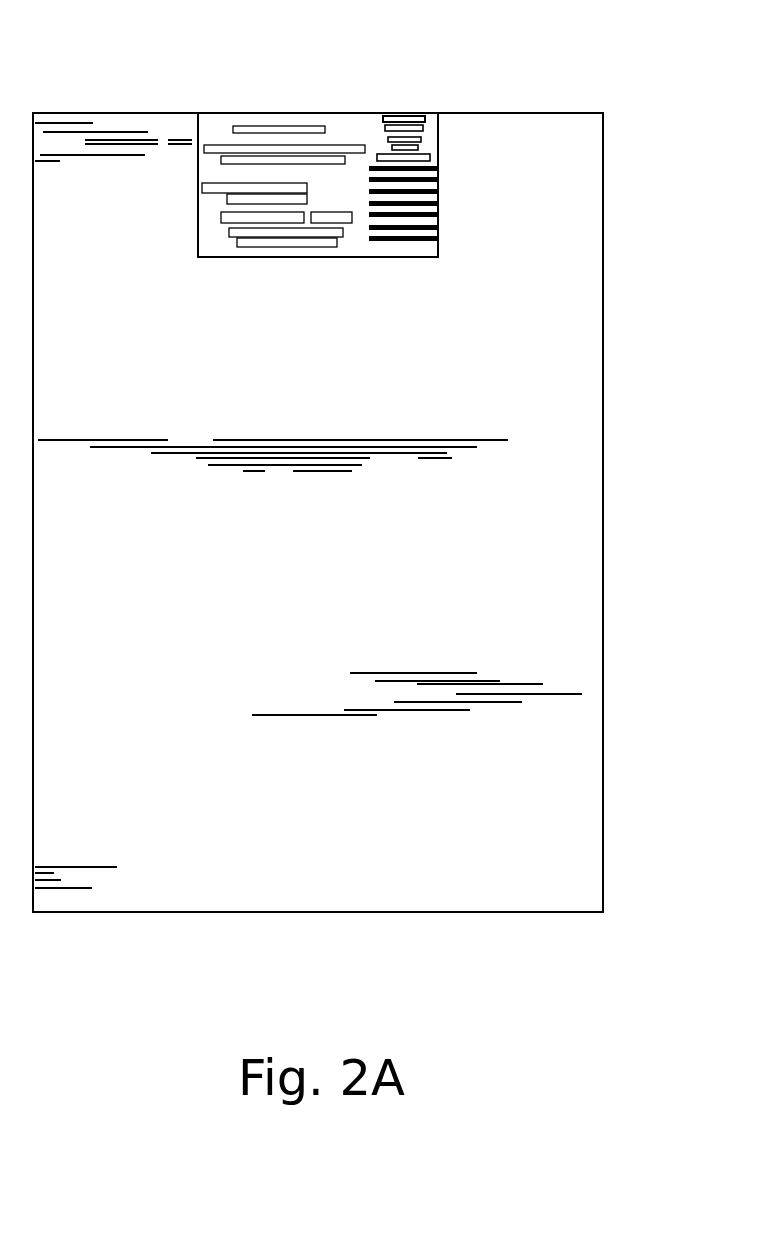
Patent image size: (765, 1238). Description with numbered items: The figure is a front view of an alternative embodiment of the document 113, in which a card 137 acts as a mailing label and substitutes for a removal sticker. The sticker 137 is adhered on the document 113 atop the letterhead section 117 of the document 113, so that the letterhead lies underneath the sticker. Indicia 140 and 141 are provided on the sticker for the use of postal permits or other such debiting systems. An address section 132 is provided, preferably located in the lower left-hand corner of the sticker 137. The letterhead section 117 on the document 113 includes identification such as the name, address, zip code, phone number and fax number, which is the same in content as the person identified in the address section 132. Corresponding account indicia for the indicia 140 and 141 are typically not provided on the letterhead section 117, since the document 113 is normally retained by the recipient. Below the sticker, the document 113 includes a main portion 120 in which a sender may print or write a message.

The document 113 is at (603, 233).
The card 137 is at (352, 126).
The indicia 141 is at (202, 161).
The address section 132 is at (207, 174).
The indicia 140 is at (434, 116).
The letterhead section 117 is at (445, 118).
The main portion 120 is at (455, 328).